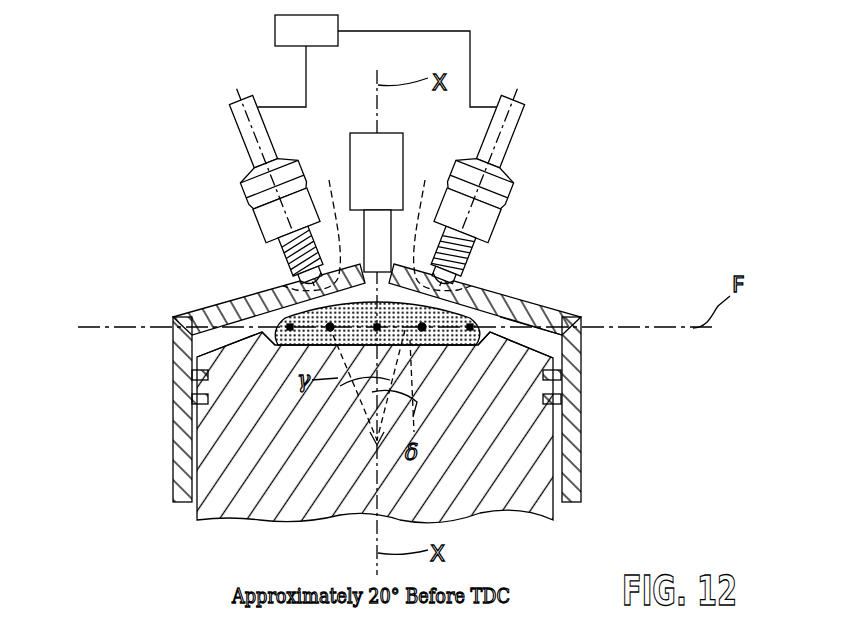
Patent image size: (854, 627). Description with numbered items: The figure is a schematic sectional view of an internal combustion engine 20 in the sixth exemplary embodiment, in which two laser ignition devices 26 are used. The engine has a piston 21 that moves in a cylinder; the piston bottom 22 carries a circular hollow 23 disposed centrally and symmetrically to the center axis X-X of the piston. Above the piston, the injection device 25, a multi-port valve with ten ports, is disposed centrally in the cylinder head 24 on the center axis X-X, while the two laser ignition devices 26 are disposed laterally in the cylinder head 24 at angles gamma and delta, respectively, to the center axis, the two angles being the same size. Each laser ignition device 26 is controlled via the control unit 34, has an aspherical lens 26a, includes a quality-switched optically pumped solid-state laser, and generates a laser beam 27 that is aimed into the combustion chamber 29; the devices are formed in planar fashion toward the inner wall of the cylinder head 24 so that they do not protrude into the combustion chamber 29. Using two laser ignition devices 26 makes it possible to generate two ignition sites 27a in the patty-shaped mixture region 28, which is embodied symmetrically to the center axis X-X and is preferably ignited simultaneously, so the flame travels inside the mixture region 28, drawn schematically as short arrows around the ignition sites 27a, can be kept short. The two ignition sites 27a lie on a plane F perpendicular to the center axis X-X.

The internal combustion engine 20 is at (134, 220).
The piston 21 is at (528, 438).
The piston bottom 22 is at (557, 351).
The circular hollow 23 is at (462, 347).
The cylinder head 24 is at (200, 313).
The injection device 25 is at (393, 137).
The laser ignition device 26 is at (238, 121).
The aspherical lens 26a is at (287, 263).
The laser beam 27 is at (377, 222).
The ignition site 27a is at (303, 284).
The patty-shaped mixture region 28 is at (535, 338).
The combustion chamber 29 is at (548, 305).
The control unit 34 is at (275, 28).